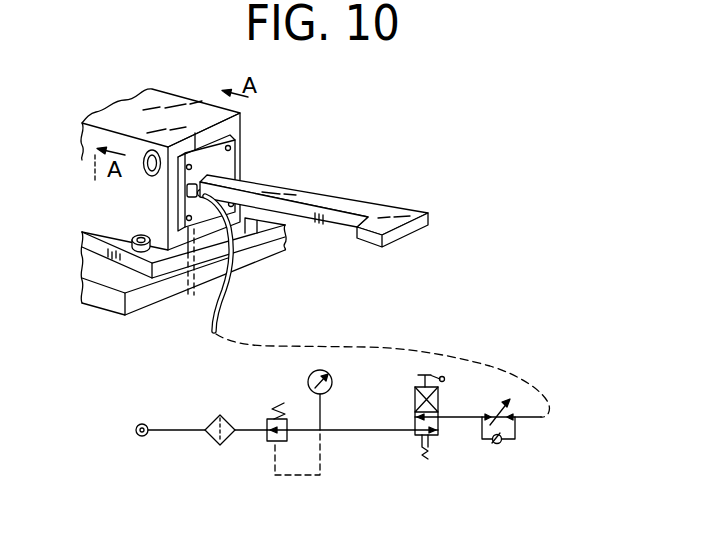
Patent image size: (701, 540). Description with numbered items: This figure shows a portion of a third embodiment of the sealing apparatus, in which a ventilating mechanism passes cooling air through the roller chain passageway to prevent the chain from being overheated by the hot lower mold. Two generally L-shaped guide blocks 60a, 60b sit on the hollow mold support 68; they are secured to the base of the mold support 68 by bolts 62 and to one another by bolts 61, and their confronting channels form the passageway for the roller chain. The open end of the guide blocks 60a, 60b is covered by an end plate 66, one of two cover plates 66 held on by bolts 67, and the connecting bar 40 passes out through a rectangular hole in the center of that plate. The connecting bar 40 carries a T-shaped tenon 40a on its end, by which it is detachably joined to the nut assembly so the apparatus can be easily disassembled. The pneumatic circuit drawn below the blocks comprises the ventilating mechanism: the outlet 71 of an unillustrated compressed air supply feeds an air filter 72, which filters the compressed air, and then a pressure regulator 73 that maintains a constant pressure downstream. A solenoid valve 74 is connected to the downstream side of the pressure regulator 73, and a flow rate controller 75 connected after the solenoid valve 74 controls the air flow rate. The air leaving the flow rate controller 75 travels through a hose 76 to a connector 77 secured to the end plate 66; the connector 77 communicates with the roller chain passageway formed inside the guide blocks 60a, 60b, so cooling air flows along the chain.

The connecting bar 40 is at (328, 194).
The T-shaped tenon 40a is at (407, 212).
The guide block 60a is at (82, 121).
The guide block 60b is at (240, 112).
The bolt 61 is at (148, 176).
The bolt 62 is at (135, 238).
The cover plate 66 is at (225, 165).
The bolt 67 is at (188, 257).
The mold support 68 is at (107, 297).
The outlet 71 is at (142, 424).
The air filter 72 is at (218, 415).
The pressure regulator 73 is at (272, 444).
The solenoid valve 74 is at (418, 440).
The flow rate controller 75 is at (507, 447).
The hose 76 is at (218, 307).
The connector 77 is at (184, 198).